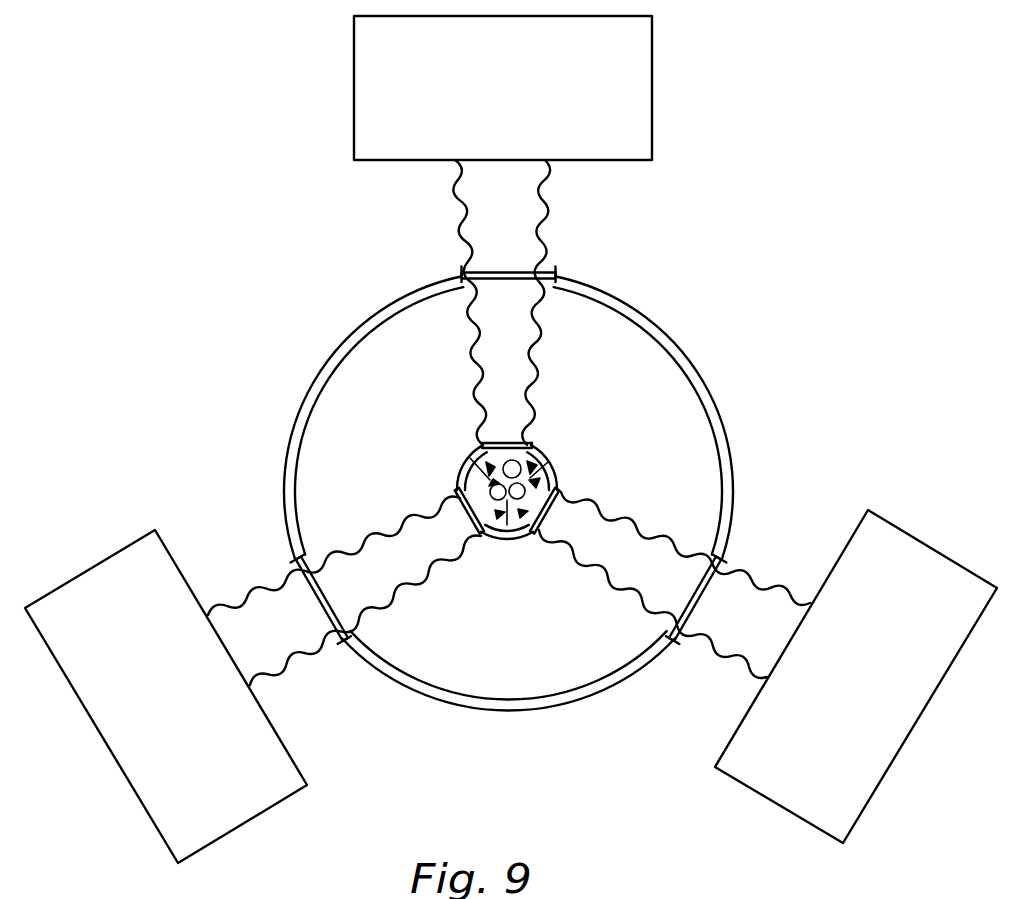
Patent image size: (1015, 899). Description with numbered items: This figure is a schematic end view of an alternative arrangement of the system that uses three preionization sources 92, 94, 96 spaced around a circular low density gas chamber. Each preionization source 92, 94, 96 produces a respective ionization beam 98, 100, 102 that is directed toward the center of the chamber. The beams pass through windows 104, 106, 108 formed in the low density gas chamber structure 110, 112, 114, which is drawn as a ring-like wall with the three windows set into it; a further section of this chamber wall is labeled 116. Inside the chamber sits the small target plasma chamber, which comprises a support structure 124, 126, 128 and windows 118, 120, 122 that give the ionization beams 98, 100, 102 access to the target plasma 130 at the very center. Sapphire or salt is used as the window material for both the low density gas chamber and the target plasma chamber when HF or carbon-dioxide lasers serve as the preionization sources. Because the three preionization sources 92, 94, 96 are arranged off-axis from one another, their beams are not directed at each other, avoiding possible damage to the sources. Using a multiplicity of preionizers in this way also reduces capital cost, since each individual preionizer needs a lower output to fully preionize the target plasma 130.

The preionization source 92 is at (628, 97).
The preionization source 94 is at (272, 777).
The preionization source 96 is at (765, 768).
The ionization beam 98 is at (548, 193).
The ionization beam 100 is at (273, 680).
The ionization beam 102 is at (758, 569).
The window 104 is at (538, 277).
The window 106 is at (335, 613).
The window 108 is at (688, 600).
The low density gas chamber structure 110 is at (335, 348).
The low density gas chamber structure 112 is at (517, 702).
The low density gas chamber structure 114 is at (698, 378).
The chamber wall section 116 is at (587, 660).
The window 118 is at (508, 443).
The window 120 is at (472, 513).
The window 122 is at (547, 503).
The support structure 124 is at (472, 458).
The support structure 126 is at (507, 512).
The support structure 128 is at (547, 458).
The target plasma 130 is at (506, 500).